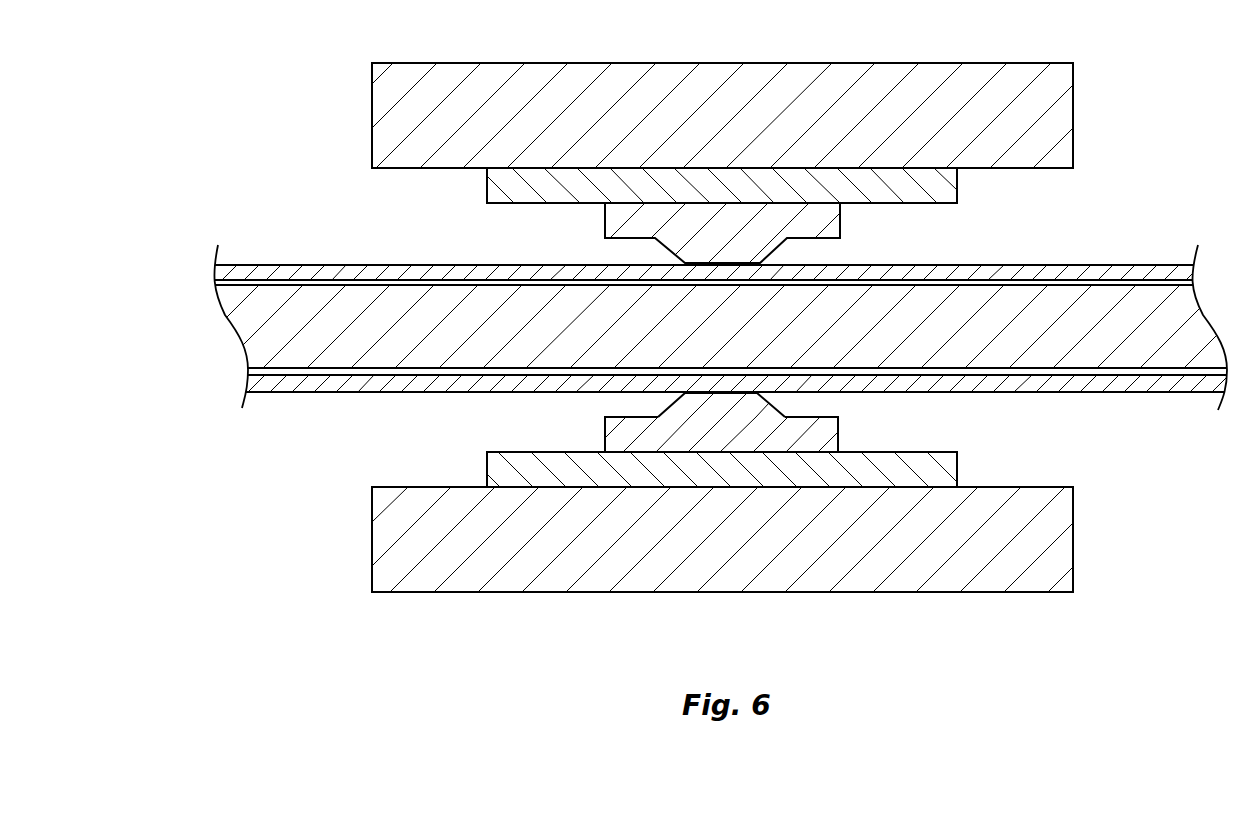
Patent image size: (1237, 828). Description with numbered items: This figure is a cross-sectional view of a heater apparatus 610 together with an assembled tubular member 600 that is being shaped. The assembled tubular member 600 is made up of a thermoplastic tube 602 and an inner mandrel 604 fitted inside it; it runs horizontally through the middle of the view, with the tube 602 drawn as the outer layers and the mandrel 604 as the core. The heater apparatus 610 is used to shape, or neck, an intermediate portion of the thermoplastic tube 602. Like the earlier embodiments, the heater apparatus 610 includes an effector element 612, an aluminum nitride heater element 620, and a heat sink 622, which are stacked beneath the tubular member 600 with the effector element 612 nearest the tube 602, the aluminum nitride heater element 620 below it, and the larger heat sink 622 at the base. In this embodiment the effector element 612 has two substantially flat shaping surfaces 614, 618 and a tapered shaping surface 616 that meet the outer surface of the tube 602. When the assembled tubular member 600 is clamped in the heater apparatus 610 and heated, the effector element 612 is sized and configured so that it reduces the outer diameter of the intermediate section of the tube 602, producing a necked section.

The assembled tubular member 600 is at (246, 196).
The thermoplastic tube 602 is at (368, 267).
The inner mandrel 604 is at (1162, 357).
The heater apparatus 610 is at (335, 393).
The effector element 612 is at (837, 437).
The substantially flat shaping surface 614 is at (813, 415).
The tapered shaping surface 616 is at (773, 410).
The substantially flat shaping surface 618 is at (723, 395).
The aluminum nitride heater element 620 is at (948, 460).
The heat sink 622 is at (1068, 538).